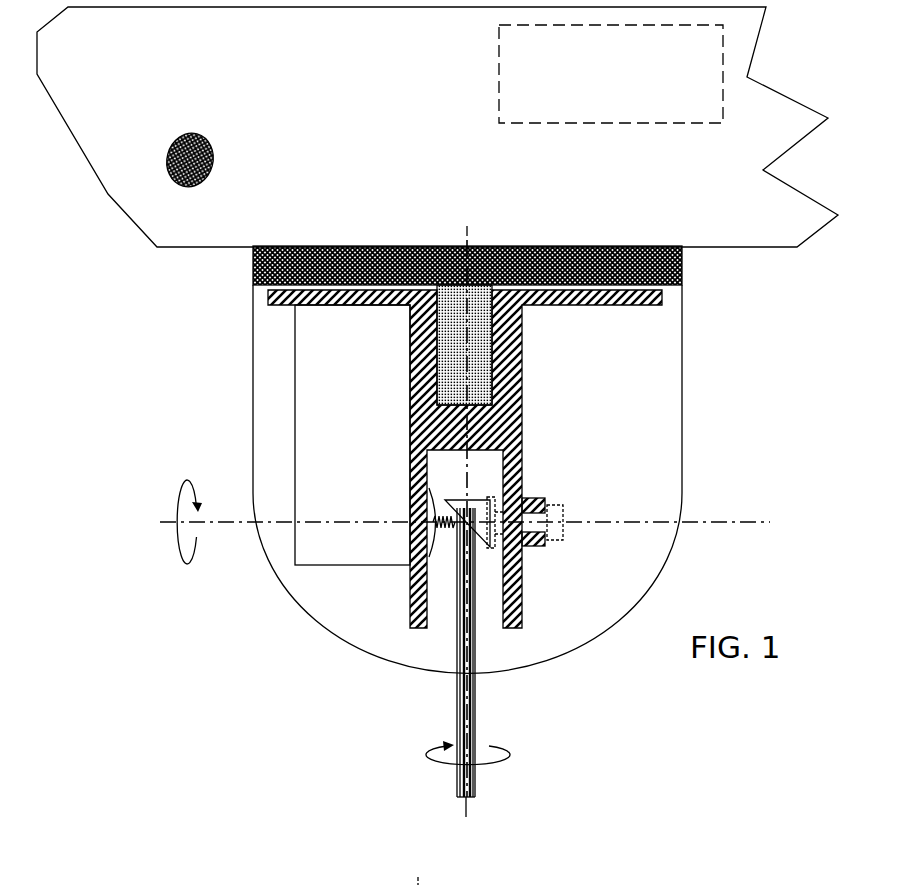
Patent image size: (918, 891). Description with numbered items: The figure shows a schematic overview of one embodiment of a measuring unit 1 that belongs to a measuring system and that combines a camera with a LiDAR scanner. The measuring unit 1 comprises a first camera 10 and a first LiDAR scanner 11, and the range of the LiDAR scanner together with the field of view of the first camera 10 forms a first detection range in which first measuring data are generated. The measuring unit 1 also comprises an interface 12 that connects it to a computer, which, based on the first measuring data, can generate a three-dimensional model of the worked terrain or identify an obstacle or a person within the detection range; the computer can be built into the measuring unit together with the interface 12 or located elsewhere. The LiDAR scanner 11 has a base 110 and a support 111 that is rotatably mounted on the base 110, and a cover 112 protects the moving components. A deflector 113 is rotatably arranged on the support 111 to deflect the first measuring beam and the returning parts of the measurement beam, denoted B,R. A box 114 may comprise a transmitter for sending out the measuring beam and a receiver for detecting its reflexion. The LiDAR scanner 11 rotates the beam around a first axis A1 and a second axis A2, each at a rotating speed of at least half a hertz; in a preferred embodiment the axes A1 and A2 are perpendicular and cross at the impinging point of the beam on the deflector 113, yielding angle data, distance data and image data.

The measuring unit 1 is at (108, 353).
The first camera 10 is at (203, 140).
The interface 12 is at (629, 89).
The first LiDAR scanner 11 is at (515, 479).
The base 110 is at (683, 262).
The support 111 is at (513, 402).
The cover 112 is at (675, 390).
The deflector 113 is at (453, 498).
The box 114 is at (372, 367).
The first axis A1 is at (466, 817).
The second axis A2 is at (718, 521).
The measuring beam and returning parts B,R is at (477, 780).